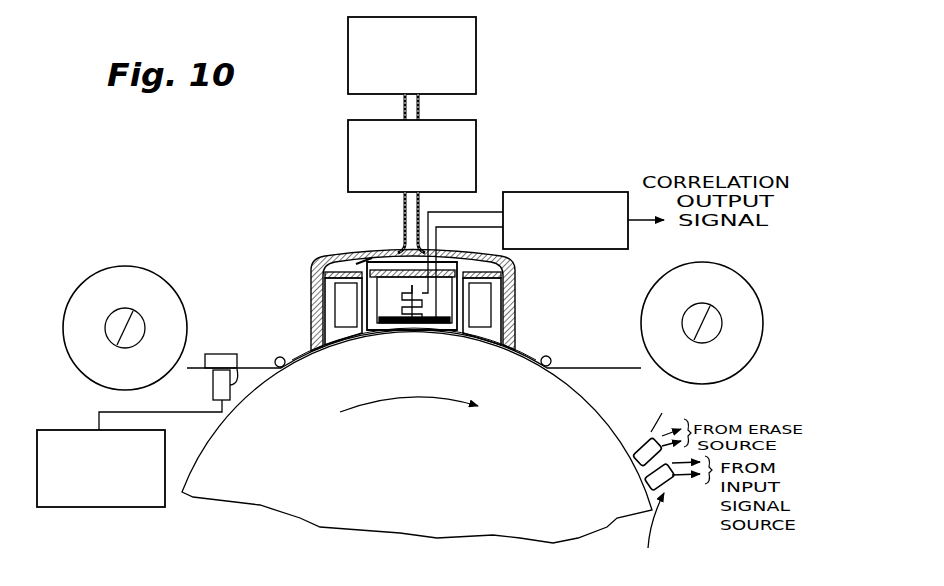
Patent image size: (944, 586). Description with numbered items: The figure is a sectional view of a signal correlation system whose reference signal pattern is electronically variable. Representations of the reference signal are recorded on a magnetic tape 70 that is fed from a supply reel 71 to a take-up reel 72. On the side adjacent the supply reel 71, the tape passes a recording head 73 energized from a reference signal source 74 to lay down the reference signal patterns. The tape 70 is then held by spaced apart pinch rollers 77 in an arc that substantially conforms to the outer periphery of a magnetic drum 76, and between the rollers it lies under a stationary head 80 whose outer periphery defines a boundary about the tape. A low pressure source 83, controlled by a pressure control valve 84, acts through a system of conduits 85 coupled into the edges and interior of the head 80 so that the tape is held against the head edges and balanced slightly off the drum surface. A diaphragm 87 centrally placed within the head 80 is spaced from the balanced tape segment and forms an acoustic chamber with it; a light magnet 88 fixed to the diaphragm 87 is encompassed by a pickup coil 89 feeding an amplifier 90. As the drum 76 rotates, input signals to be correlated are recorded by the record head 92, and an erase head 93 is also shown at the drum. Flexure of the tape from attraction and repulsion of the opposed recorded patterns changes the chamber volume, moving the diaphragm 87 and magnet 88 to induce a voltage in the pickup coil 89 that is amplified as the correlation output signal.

The magnetic tape 70 is at (193, 367).
The supply reel 71 is at (160, 280).
The take-up reel 72 is at (737, 282).
The recording head 73 is at (246, 366).
The reference signal source 74 is at (72, 430).
The magnetic drum 76 is at (164, 412).
The pinch rollers 77 is at (281, 357).
The stationary head 80 is at (514, 290).
The low pressure source 83 is at (477, 33).
The pressure control valve 84 is at (478, 137).
The conduits 85 is at (403, 214).
The diaphragm 87 is at (387, 320).
The light magnet 88 is at (402, 292).
The pickup coil 89 is at (365, 262).
The amplifier 90 is at (585, 192).
The record head 92 is at (668, 481).
The erase head 93 is at (655, 437).